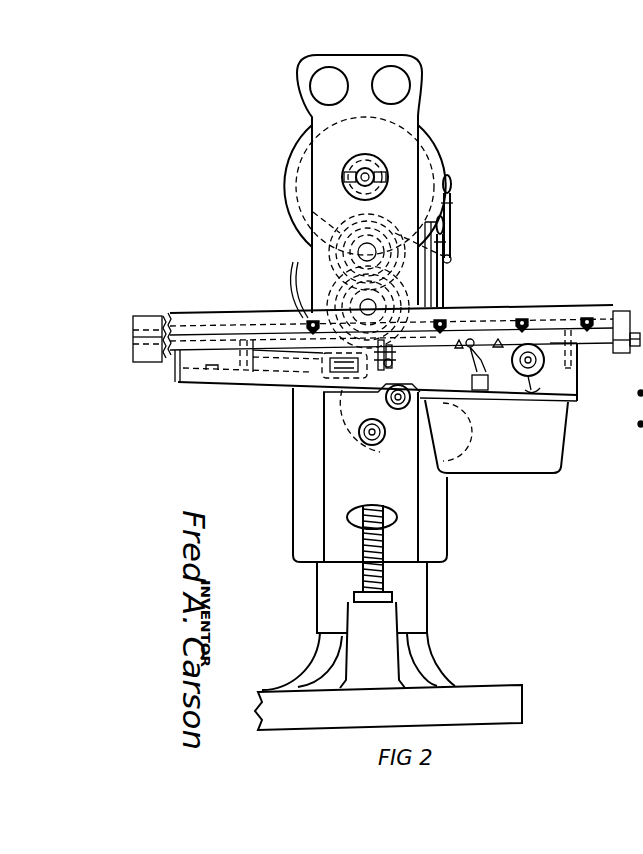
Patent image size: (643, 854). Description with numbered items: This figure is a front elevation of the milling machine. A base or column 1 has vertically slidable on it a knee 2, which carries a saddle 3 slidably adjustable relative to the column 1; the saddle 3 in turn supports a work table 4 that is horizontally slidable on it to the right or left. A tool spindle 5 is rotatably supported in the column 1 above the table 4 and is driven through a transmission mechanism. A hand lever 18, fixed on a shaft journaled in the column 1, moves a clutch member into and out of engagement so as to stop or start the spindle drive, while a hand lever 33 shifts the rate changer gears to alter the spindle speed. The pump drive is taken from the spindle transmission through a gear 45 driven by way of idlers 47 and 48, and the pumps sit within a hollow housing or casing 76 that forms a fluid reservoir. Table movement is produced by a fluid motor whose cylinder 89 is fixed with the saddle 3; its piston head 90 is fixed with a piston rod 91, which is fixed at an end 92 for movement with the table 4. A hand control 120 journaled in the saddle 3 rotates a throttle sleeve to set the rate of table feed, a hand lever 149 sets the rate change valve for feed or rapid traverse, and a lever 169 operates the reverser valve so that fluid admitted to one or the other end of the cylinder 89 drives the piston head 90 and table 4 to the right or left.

The base or column 1 is at (422, 580).
The knee 2 is at (437, 497).
The saddle 3 is at (572, 376).
The work table 4 is at (550, 311).
The tool spindle 5 is at (377, 164).
The hand lever 18 is at (440, 273).
The hand lever 33 is at (448, 211).
The gear 45 is at (398, 462).
The idler 47 is at (360, 392).
The idler 48 is at (363, 413).
The hollow housing or casing 76 is at (553, 472).
The cylinder 89 is at (230, 390).
The piston head 90 is at (247, 362).
The piston rod 91 is at (277, 352).
The end 92 is at (618, 348).
The hand control 120 is at (546, 390).
The hand lever 149 is at (468, 350).
The lever 169 is at (452, 327).